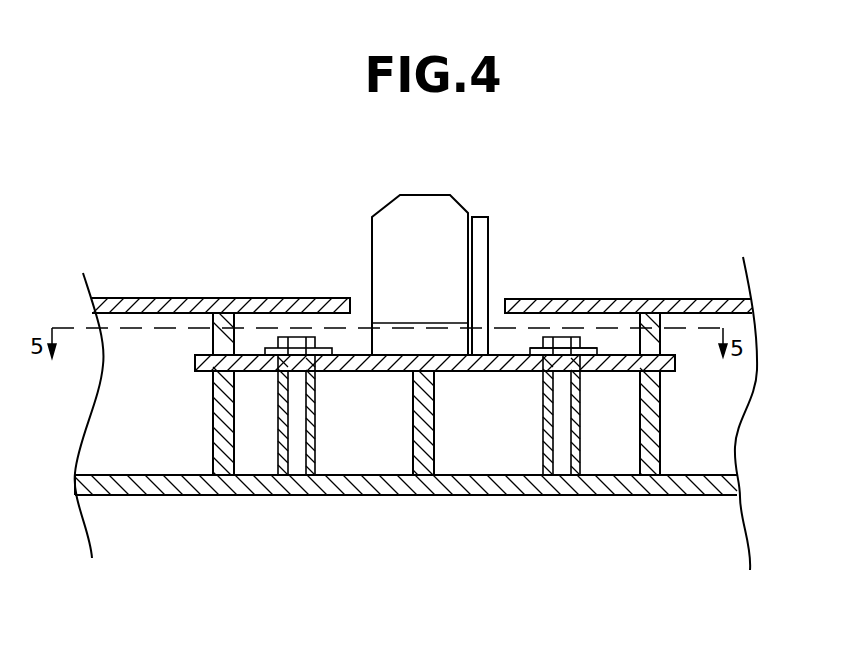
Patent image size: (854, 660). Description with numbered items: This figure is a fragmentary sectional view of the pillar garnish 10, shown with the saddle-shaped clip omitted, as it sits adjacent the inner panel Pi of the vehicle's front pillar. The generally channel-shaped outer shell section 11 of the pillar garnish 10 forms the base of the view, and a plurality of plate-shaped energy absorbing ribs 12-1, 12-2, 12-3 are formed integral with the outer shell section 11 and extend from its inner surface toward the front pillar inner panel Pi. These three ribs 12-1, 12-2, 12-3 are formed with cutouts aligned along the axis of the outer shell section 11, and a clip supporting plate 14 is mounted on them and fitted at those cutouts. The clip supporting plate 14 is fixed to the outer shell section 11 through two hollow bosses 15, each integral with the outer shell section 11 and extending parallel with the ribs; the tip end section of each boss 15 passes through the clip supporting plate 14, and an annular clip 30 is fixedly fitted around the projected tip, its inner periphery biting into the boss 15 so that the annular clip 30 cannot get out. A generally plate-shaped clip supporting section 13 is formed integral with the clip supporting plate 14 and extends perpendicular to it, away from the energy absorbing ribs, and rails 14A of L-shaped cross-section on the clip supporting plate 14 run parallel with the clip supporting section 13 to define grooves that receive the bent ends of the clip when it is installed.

The pillar garnish 10 is at (477, 510).
The outer shell section 11 is at (703, 497).
The energy absorbing rib 12-1 is at (212, 462).
The energy absorbing rib 12-2 is at (406, 462).
The energy absorbing rib 12-3 is at (638, 447).
The clip supporting section 13 is at (457, 215).
The clip supporting plate 14 is at (677, 362).
The rail 14A is at (397, 343).
The boss 15 is at (275, 450).
The annular clip 30 is at (593, 345).
The inner panel Pi is at (686, 300).